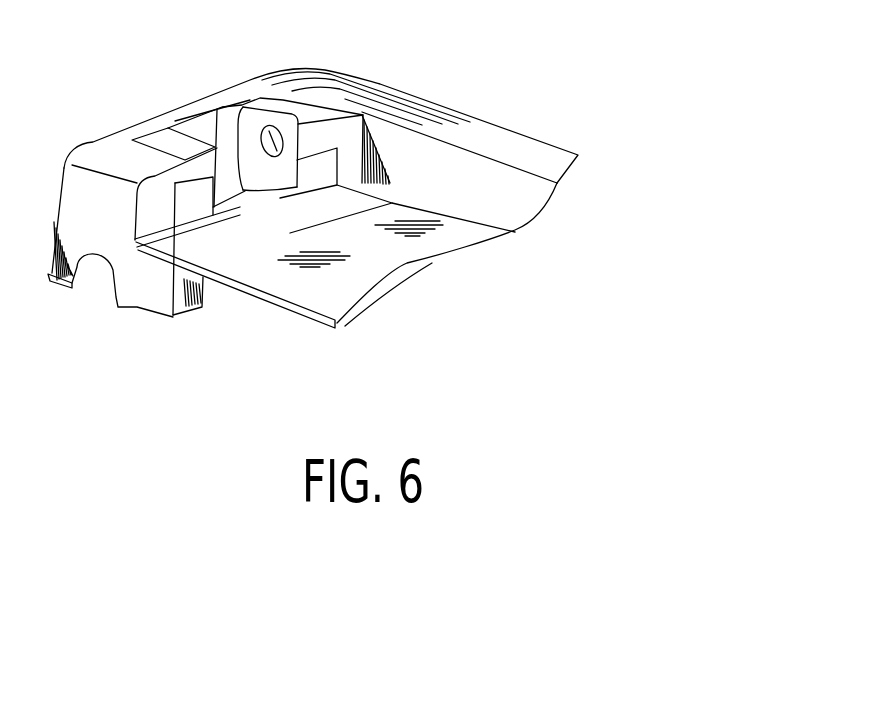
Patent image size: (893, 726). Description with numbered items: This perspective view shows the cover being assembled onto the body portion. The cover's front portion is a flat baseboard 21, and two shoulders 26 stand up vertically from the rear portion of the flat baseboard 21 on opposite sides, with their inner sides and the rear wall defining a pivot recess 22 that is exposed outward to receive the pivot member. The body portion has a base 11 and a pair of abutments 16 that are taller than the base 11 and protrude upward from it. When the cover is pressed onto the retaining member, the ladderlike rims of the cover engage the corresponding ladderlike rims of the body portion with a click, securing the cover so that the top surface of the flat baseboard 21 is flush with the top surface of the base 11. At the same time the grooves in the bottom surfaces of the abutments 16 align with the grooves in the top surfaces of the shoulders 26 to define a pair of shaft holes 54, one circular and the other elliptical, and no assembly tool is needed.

The base 11 is at (368, 237).
The abutments 16 is at (177, 147).
The flat baseboard 21 is at (237, 230).
The pivot recess 22 is at (226, 162).
The shoulders 26 is at (317, 172).
The shaft holes 54 is at (265, 123).